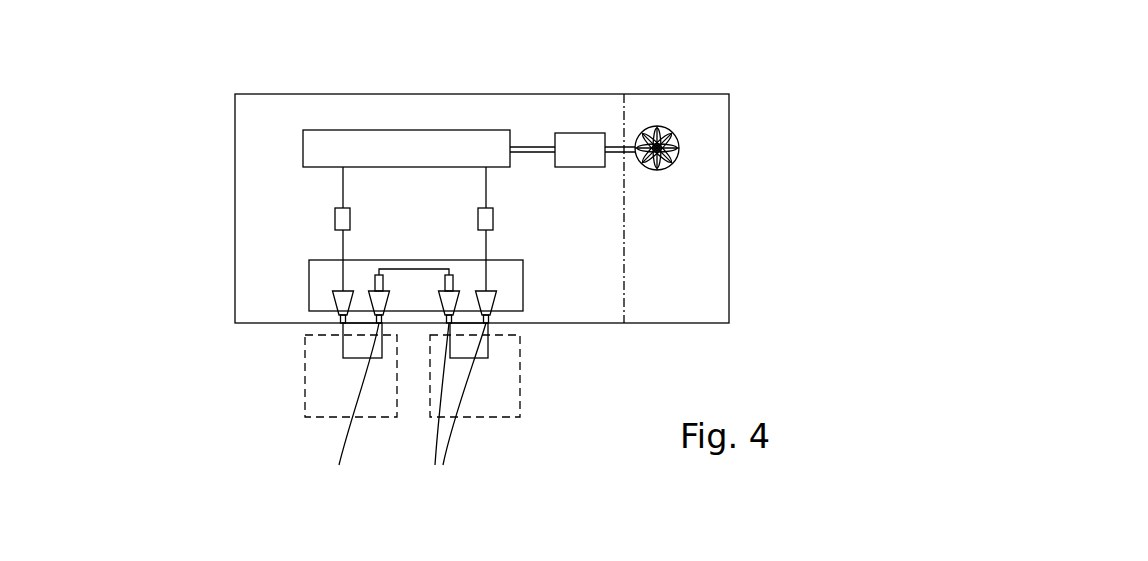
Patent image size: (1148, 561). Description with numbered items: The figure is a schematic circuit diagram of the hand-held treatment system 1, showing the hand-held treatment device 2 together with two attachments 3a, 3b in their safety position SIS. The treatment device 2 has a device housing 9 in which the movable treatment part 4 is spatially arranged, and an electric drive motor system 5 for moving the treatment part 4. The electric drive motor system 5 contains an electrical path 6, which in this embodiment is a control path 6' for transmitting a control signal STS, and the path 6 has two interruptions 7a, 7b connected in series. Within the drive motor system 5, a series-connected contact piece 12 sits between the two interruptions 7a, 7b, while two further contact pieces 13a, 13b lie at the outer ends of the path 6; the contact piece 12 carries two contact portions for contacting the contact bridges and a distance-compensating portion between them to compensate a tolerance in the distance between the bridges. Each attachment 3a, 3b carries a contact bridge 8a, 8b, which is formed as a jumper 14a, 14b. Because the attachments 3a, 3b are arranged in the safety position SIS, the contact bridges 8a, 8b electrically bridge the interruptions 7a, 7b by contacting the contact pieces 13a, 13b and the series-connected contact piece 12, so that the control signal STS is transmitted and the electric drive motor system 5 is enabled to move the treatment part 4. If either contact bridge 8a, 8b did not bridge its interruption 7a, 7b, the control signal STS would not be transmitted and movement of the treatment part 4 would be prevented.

The hand-held treatment system 1 is at (841, 127).
The hand-held treatment device 2 is at (513, 208).
The device housing 9 is at (729, 180).
The movable treatment part 4 is at (675, 140).
The electric drive motor system 5 is at (450, 145).
The control signal STS is at (343, 185).
The electrical path 6 is at (345, 285).
The control path 6' is at (345, 285).
The series-connected contact piece 12 is at (408, 269).
The contact piece 13a is at (338, 297).
The contact piece 13b is at (488, 296).
The interruption 7a is at (222, 342).
The interruption 7b is at (457, 392).
The contact bridge 8a is at (265, 351).
The jumper 14a is at (343, 345).
The contact bridge 8b is at (544, 340).
The jumper 14b is at (495, 340).
The attachment 3a is at (305, 392).
The attachment 3b is at (520, 362).
The safety position SIS is at (391, 384).